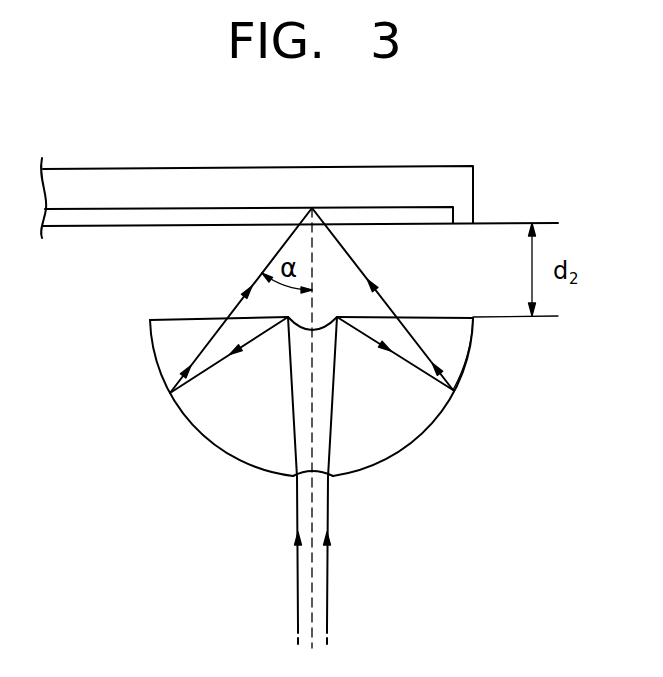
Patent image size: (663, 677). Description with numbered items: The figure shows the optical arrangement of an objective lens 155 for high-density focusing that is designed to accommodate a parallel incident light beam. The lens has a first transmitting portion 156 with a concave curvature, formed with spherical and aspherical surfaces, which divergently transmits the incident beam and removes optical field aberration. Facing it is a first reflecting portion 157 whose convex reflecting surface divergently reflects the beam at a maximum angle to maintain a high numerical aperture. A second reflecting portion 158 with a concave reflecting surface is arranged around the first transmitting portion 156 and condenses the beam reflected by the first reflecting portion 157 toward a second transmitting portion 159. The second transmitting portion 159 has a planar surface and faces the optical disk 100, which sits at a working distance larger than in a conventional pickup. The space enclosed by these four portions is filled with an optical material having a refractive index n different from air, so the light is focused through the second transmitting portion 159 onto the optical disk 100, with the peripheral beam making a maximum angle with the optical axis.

The optical disk 100 is at (484, 166).
The objective lens 155 is at (311, 461).
The first transmitting portion 156 is at (331, 477).
The first reflecting portion 157 is at (308, 328).
The second reflecting portion 158 is at (427, 430).
The second transmitting portion 159 is at (447, 318).
The refractive index n is at (453, 362).